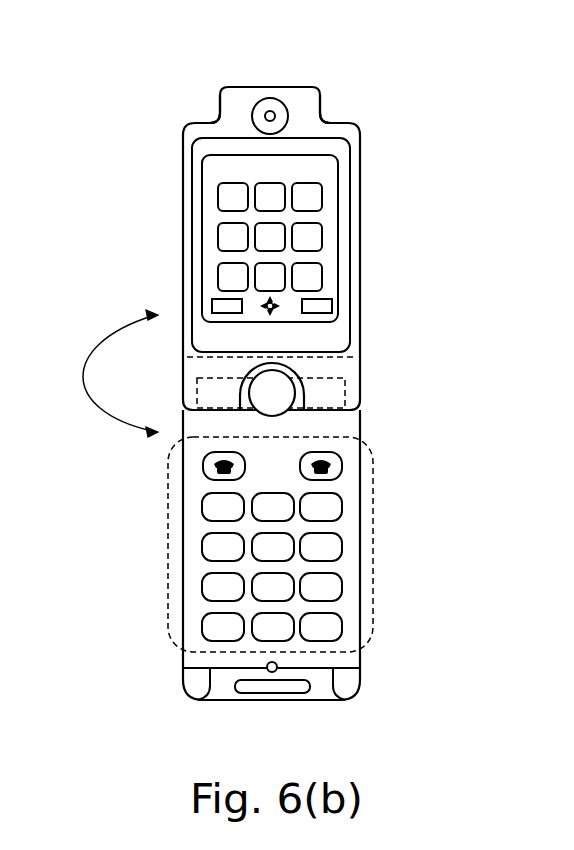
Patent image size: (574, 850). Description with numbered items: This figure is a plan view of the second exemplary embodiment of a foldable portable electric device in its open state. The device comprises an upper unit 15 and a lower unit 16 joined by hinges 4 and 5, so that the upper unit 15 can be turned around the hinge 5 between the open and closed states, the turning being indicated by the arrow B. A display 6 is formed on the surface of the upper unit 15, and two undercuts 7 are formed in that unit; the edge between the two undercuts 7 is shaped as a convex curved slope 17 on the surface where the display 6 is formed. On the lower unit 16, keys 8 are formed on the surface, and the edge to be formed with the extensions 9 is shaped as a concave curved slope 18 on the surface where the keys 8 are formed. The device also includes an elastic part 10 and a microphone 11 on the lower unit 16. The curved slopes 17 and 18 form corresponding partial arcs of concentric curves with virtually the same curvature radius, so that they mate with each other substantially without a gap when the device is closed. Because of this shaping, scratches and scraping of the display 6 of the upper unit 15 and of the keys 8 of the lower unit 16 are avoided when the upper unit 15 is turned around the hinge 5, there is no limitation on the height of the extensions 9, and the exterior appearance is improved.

The hinge 4 is at (330, 392).
The hinge 5 is at (270, 392).
The display 6 is at (197, 258).
The undercuts 7 is at (220, 107).
The keys 8 is at (377, 533).
The extensions 9 is at (207, 687).
The elastic part 10 is at (263, 688).
The microphone 11 is at (267, 665).
The upper unit 15 is at (353, 214).
The lower unit 16 is at (350, 445).
The convex curved slope 17 is at (287, 87).
The concave curved slope 18 is at (292, 700).
The rotation direction B is at (82, 350).